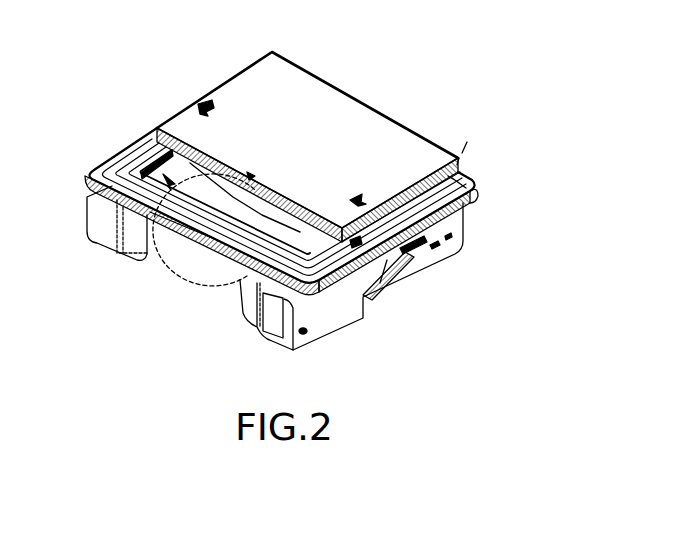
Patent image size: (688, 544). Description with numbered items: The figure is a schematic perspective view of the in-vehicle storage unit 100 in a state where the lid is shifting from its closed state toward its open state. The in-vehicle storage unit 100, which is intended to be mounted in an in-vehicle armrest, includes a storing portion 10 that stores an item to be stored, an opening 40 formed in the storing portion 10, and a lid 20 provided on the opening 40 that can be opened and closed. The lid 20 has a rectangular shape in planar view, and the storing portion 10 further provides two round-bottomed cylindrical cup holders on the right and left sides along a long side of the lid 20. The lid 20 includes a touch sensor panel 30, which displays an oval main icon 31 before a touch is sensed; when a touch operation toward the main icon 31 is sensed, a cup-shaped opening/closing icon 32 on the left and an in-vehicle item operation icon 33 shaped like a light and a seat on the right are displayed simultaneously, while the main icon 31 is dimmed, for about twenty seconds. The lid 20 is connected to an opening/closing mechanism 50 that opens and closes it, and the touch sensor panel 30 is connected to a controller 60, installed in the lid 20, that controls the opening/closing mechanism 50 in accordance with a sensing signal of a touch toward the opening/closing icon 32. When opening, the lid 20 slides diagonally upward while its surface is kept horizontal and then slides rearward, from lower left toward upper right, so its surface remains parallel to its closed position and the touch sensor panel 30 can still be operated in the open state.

The in-vehicle storage unit 100 is at (328, 189).
The storing portion 10 is at (160, 257).
The lid 20 is at (299, 126).
The touch sensor panel 30 is at (323, 143).
The main icon 31 is at (251, 176).
The opening/closing icon 32 is at (362, 198).
The in-vehicle item operation icon 33 is at (200, 102).
The opening 40 is at (116, 150).
The opening/closing mechanism 50 is at (377, 240).
The controller 60 is at (522, 143).